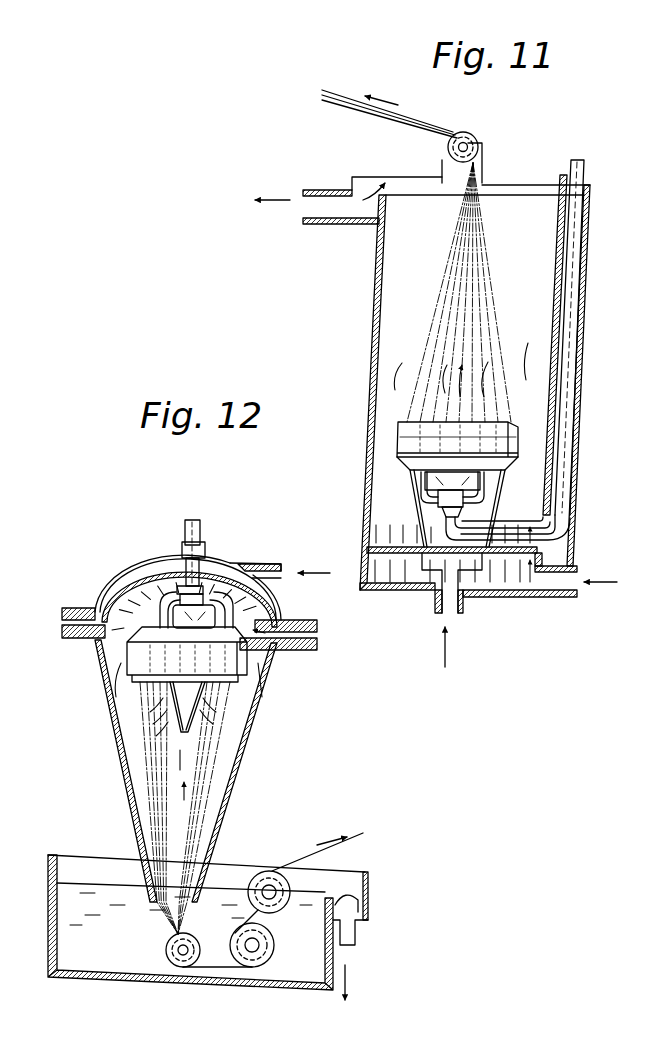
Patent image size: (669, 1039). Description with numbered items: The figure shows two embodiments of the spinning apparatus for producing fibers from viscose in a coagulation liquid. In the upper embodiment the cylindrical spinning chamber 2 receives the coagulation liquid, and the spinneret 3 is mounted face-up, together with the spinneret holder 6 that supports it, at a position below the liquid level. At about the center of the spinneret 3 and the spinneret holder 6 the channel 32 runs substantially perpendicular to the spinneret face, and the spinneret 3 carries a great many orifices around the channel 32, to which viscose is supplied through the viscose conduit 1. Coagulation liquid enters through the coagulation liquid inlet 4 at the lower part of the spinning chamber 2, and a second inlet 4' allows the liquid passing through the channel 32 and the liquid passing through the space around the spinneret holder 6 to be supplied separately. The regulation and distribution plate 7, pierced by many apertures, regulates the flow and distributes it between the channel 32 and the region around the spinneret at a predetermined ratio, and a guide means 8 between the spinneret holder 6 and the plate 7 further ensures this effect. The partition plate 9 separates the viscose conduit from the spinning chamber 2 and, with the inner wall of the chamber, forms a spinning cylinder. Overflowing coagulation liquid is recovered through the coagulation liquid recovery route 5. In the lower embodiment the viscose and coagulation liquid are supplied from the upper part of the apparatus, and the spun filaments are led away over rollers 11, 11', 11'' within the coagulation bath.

In FIG. 11, the viscose conduit 1 is at (568, 325).
In FIG. 12, the viscose conduit 1 is at (201, 526).
In FIG. 11, the spinning chamber 2 is at (369, 387).
In FIG. 12, the spinning chamber 2 is at (274, 698).
In FIG. 11, the spinneret 3 is at (513, 421).
In FIG. 12, the spinneret 3 is at (231, 688).
In FIG. 11, the coagulation liquid inlet 4 is at (452, 610).
In FIG. 12, the coagulation liquid inlet 4 is at (280, 559).
In FIG. 11, the second coagulation liquid inlet 4' is at (578, 567).
In FIG. 11, the coagulation liquid recovery route 5 is at (303, 208).
In FIG. 12, the coagulation liquid recovery route 5 is at (352, 946).
In FIG. 11, the spinneret holder 6 is at (517, 444).
In FIG. 12, the spinneret holder 6 is at (135, 657).
In FIG. 11, the regulation and distribution plate 7 is at (403, 553).
In FIG. 12, the regulation and distribution plate 7 is at (262, 593).
In FIG. 11, the guide means 8 is at (498, 500).
In FIG. 11, the partition plate 9 is at (562, 174).
In FIG. 11, the take-up roller 11 is at (421, 126).
In FIG. 12, the take-up roller 11 is at (209, 950).
In FIG. 12, the second roller 11' is at (273, 938).
In FIG. 12, the third roller 11'' is at (305, 873).
In FIG. 11, the channel 32 is at (450, 443).
In FIG. 12, the channel 32 is at (195, 662).